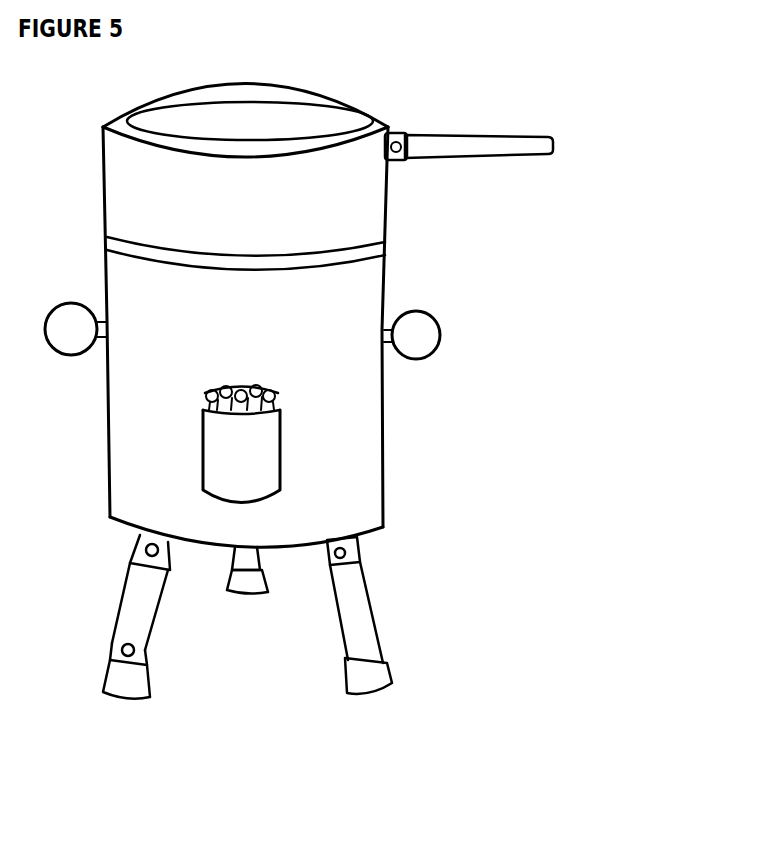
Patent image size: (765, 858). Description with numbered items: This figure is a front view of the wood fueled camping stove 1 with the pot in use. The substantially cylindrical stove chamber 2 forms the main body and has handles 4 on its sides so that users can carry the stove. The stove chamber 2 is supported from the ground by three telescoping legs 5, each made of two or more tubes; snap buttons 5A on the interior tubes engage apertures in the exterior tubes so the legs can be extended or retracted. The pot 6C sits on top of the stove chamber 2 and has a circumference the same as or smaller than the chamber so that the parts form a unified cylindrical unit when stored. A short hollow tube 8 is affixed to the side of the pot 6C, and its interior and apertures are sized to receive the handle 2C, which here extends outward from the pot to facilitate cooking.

The wood fueled camping stove 1 is at (608, 92).
The stove chamber 2 is at (347, 290).
The handle 2C is at (522, 143).
The handles 4 is at (441, 333).
The telescoping legs 5 is at (335, 682).
The snap buttons 5A is at (136, 652).
The pot 6C is at (370, 205).
The hollow tube 8 is at (400, 125).